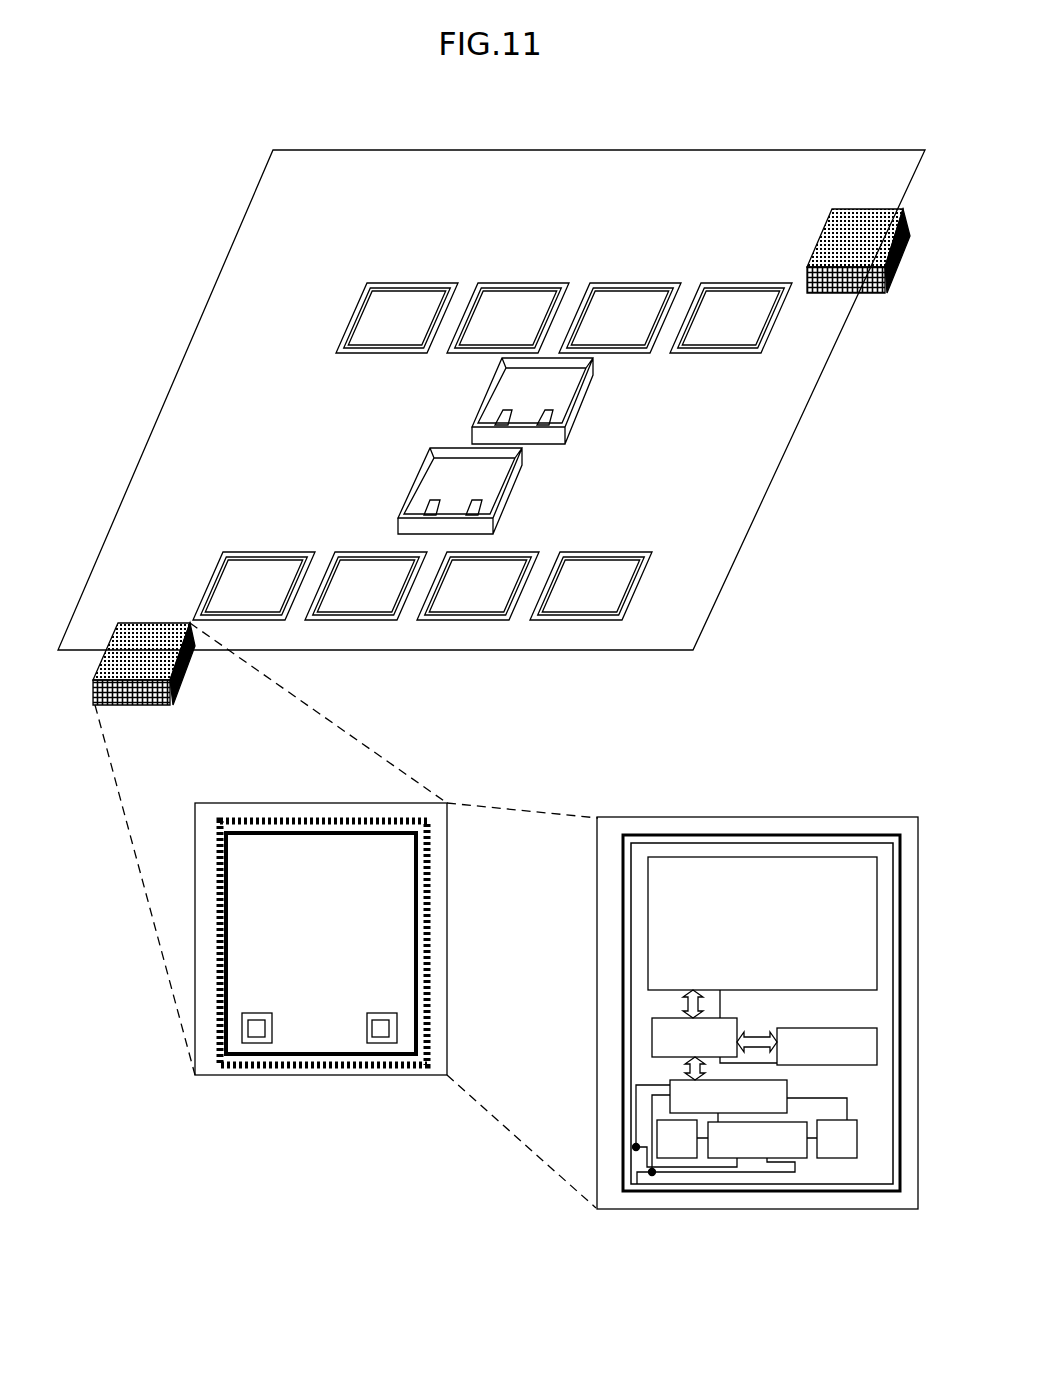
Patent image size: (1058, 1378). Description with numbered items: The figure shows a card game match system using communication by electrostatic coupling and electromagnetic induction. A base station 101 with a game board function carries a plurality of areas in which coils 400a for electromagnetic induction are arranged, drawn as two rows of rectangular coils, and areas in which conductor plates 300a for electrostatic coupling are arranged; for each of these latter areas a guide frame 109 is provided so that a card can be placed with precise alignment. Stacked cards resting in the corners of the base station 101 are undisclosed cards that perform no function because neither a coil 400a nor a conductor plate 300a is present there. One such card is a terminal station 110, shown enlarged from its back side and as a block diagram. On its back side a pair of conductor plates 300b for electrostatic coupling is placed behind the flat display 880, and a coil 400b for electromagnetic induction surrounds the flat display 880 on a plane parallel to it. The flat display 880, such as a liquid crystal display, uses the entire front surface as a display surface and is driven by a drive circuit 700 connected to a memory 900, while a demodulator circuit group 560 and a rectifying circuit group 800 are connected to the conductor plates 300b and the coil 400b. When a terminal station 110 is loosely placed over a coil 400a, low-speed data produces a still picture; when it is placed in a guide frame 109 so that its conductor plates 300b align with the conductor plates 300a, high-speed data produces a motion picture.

The base station 101 is at (376, 152).
The coil for electromagnetic induction 400a is at (402, 283).
The conductor plate for electrostatic coupling 300a is at (500, 414).
The guide frame 109 is at (590, 377).
The coil for electromagnetic induction 400b is at (279, 818).
The conductor plate for electrostatic coupling 300b is at (255, 1013).
The terminal station 110 is at (690, 815).
The flat display 880 is at (847, 857).
The drive circuit 700 is at (652, 1033).
The memory 900 is at (818, 1028).
The demodulator circuit group 560 is at (787, 1090).
The rectifying circuit group 800 is at (766, 1160).